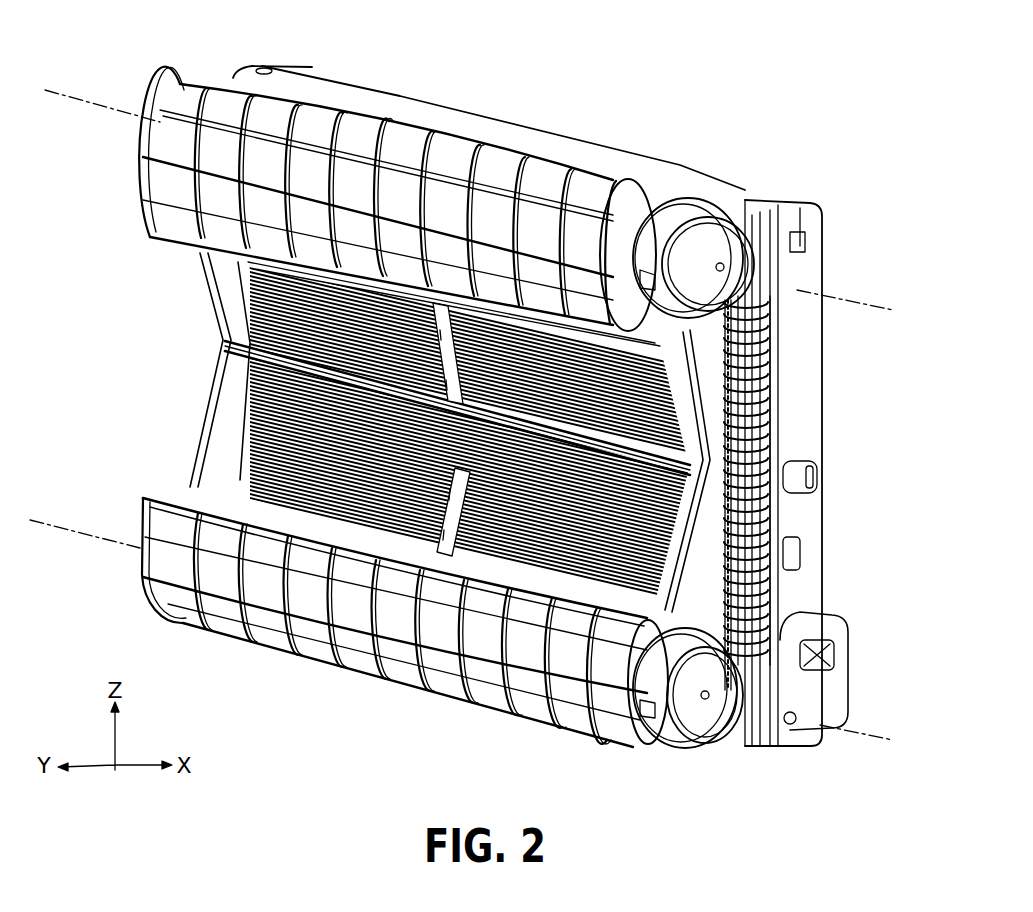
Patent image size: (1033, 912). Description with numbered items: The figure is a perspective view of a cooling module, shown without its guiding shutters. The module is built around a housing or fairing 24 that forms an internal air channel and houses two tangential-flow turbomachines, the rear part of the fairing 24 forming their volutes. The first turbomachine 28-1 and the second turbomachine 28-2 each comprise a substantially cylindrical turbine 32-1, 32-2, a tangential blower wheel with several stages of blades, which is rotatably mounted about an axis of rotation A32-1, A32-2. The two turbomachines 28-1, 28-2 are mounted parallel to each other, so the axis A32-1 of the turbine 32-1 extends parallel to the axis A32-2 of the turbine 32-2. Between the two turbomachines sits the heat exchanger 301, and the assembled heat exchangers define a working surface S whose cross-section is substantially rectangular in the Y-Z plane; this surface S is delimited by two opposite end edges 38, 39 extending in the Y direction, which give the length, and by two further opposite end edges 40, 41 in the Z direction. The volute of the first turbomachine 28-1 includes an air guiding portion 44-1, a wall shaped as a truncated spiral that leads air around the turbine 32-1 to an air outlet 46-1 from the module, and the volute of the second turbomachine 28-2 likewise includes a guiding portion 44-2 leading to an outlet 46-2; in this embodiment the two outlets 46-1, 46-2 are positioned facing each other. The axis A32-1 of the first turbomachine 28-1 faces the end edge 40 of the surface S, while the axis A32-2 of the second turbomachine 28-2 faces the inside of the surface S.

The housing or fairing 24 is at (765, 354).
The first tangential-flow turbomachine 28-1 is at (488, 222).
The second tangential-flow turbomachine 28-2 is at (452, 663).
The heat exchanger 301 is at (283, 415).
The turbine of the first turbomachine 32-1 is at (597, 207).
The turbine of the second turbomachine 32-2 is at (540, 700).
The end edge 38 is at (478, 122).
The end edge 39 is at (793, 724).
The end edge 40 is at (262, 70).
The end edge 41 is at (803, 428).
The air guiding portion 44-1 is at (332, 135).
The air guiding portion 44-2 is at (310, 605).
The air outlet 46-1 is at (337, 298).
The air outlet 46-2 is at (283, 527).
The working surface S is at (597, 543).
The axis of rotation A32-1 is at (880, 300).
The axis of rotation A32-2 is at (879, 733).